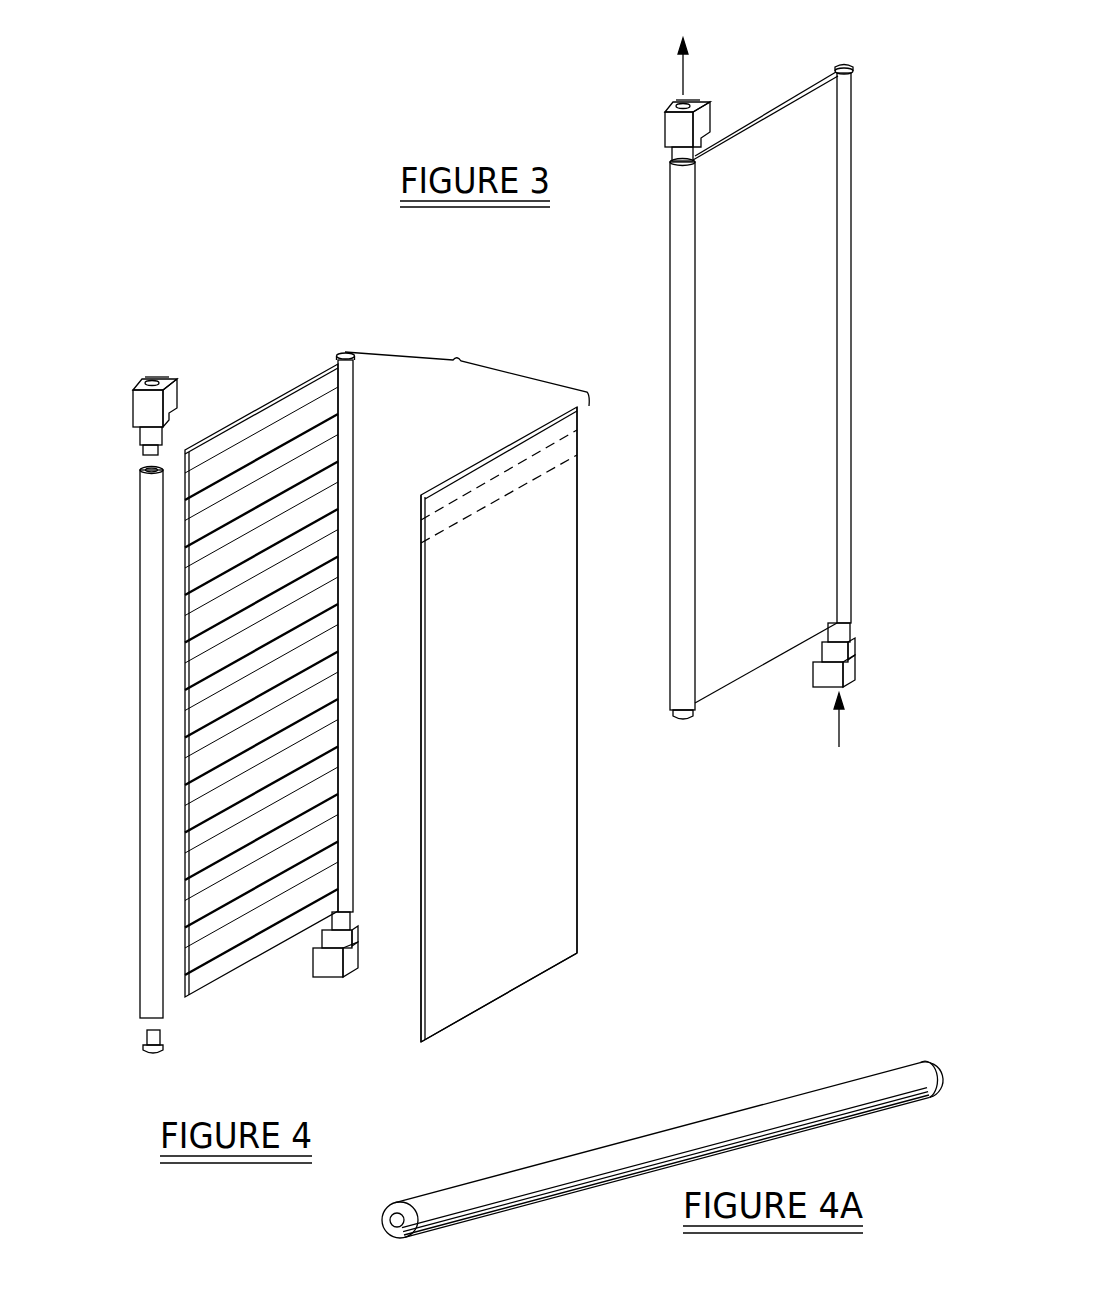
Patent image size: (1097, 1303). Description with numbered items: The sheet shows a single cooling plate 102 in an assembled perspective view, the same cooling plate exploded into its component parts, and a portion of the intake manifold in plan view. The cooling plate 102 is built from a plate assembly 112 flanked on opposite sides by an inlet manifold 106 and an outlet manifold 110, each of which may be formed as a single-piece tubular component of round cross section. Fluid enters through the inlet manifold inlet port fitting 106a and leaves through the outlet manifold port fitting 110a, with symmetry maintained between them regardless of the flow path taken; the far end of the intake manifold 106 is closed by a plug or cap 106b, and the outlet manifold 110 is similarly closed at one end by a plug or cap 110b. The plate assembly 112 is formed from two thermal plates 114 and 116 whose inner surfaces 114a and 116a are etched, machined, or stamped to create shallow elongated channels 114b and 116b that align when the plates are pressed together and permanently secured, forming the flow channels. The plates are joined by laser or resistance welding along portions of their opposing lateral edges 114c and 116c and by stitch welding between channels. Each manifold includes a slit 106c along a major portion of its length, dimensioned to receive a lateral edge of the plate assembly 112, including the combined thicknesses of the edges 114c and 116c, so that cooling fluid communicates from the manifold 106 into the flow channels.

In FIG. 3, the cooling plate 102 is at (636, 70).
In FIG. 4, the cooling plate 102 is at (158, 346).
In FIG. 3, the inlet manifold 106 is at (847, 233).
In FIG. 4A, the inlet manifold 106 is at (645, 1096).
In FIG. 3, the inlet manifold inlet port fitting 106a is at (850, 665).
In FIG. 3, the plug or cap 106b is at (841, 66).
In FIG. 4A, the slit 106c is at (738, 1140).
In FIG. 3, the outlet manifold 110 is at (683, 293).
In FIG. 4, the outlet manifold 110 is at (150, 598).
In FIG. 3, the outlet manifold port fitting 110a is at (673, 128).
In FIG. 4, the outlet manifold port fitting 110a is at (143, 409).
In FIG. 3, the plug or cap 110b is at (684, 719).
In FIG. 4, the plug or cap 110b is at (144, 1036).
In FIG. 3, the plate assembly 112 is at (804, 117).
In FIG. 4, the plate assembly 112 is at (467, 366).
In FIG. 4, the thermal plate 114 is at (555, 549).
In FIG. 4, the inner surface 114a is at (420, 1042).
In FIG. 4, the shallow elongated channel 114b is at (535, 486).
In FIG. 4, the lateral edge 114c is at (579, 825).
In FIG. 4, the thermal plate 116 is at (316, 368).
In FIG. 4, the inner surface 116a is at (214, 446).
In FIG. 4, the shallow elongated channel 116b is at (272, 440).
In FIG. 4, the lateral edge 116c is at (337, 448).